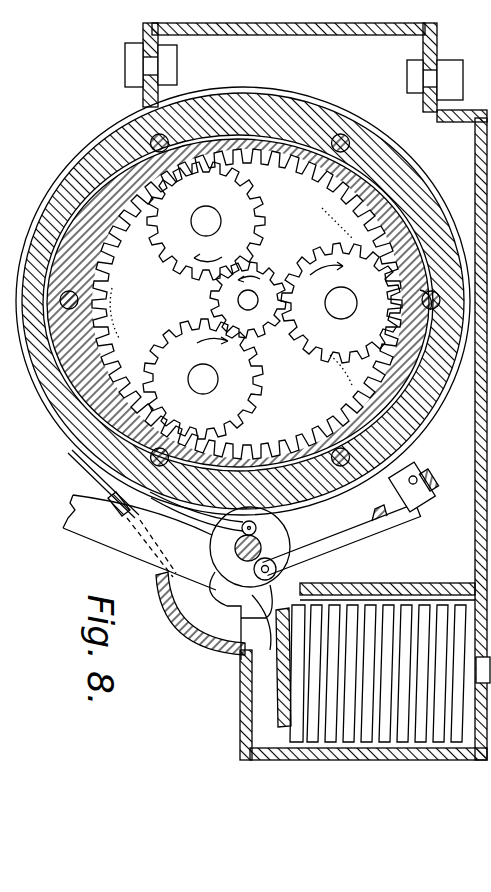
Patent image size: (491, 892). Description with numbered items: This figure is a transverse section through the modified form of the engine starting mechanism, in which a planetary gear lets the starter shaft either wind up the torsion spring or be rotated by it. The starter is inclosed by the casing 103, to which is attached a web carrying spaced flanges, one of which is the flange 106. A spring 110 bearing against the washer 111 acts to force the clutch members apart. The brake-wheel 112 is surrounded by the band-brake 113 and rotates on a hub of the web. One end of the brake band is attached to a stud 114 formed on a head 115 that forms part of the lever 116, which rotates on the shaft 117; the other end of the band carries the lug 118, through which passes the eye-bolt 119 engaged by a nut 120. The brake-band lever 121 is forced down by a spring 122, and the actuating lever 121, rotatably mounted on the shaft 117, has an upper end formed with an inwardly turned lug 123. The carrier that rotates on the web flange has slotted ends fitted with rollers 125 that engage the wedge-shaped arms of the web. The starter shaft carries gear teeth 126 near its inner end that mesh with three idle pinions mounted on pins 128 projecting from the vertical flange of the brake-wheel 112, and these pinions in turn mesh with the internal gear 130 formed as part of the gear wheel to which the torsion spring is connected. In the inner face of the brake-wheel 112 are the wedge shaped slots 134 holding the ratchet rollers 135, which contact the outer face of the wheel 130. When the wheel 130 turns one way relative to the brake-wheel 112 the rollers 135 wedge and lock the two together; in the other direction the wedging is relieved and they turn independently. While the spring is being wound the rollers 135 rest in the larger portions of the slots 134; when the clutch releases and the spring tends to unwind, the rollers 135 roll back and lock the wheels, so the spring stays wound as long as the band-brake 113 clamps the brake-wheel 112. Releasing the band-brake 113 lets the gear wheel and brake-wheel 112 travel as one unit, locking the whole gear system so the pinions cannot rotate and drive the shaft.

The casing 103 is at (475, 472).
The internal gear 130 is at (410, 242).
The band-brake 113 is at (435, 405).
The brake-wheel 112 is at (408, 424).
The wedge shaped slots 134 is at (247, 304).
The rollers 125 is at (165, 151).
The ratchet rollers 135 is at (422, 300).
The pins 128 is at (191, 222).
The brake-band lever 121 is at (64, 535).
The gear teeth 126 is at (261, 336).
The flange 106 is at (237, 300).
The shaft 117 is at (282, 541).
The washer 111 is at (236, 548).
The head 115 is at (200, 528).
The eye-bolt 119 is at (346, 528).
The spring 110 is at (305, 525).
The nut 120 is at (428, 497).
The lug 118 is at (400, 511).
The stud 114 is at (125, 582).
The lever 116 is at (238, 616).
The spring 122 is at (368, 742).
The inwardly turned lug 123 is at (278, 630).